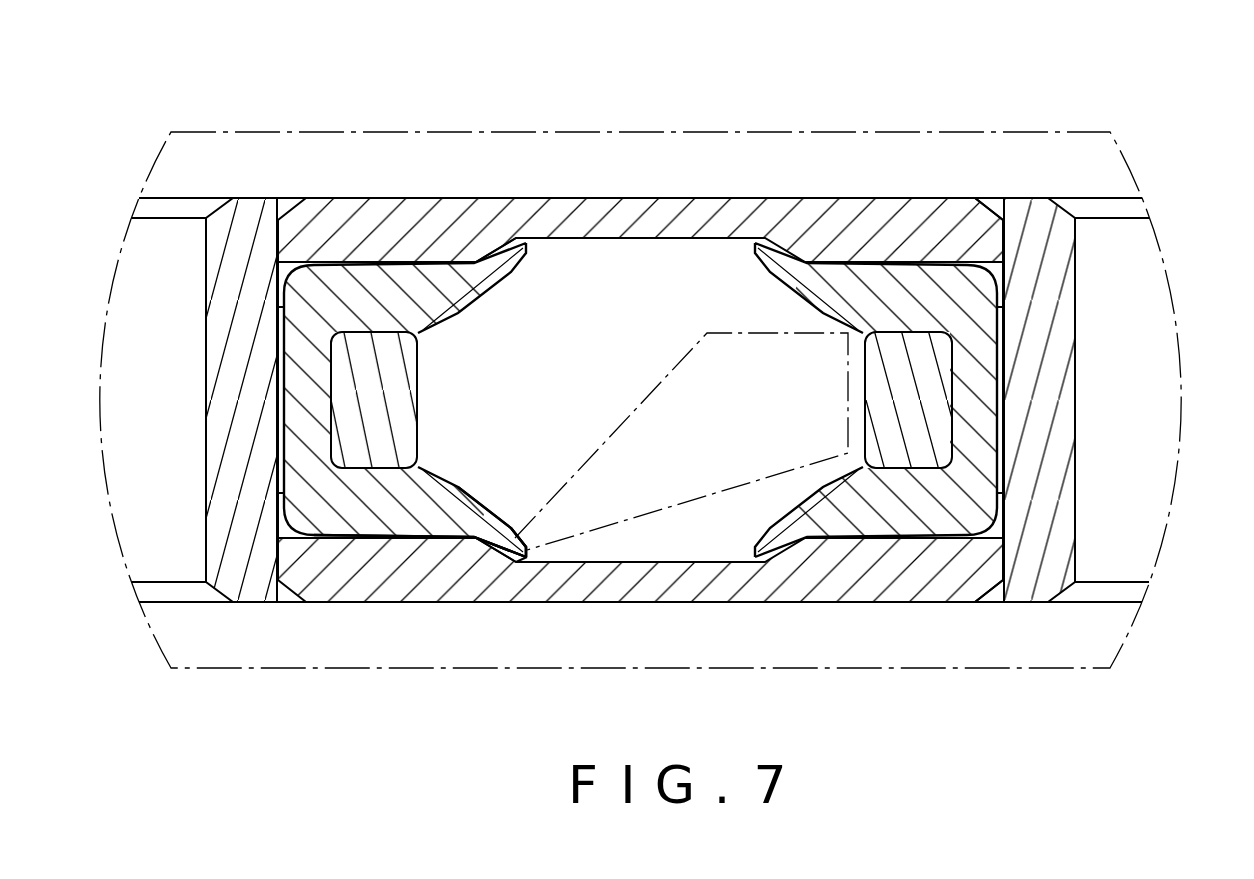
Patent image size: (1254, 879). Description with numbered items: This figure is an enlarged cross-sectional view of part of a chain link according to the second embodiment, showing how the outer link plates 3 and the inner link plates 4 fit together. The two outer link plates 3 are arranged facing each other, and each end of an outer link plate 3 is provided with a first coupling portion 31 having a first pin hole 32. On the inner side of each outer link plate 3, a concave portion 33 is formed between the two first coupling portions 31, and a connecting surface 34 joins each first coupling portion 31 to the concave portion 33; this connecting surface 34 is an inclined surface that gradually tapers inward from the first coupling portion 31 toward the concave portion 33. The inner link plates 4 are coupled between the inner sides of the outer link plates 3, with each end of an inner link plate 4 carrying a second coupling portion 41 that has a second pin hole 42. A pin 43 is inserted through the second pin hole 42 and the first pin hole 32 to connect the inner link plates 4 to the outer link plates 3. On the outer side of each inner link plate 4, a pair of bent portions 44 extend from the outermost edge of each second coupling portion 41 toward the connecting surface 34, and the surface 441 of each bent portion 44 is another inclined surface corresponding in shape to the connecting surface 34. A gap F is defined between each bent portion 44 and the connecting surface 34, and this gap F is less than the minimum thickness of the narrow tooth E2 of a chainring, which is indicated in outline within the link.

The outer link plate 3 is at (665, 213).
The first coupling portion 31 is at (967, 238).
The first pin hole 32 is at (1006, 240).
The concave portion 33 is at (605, 237).
The connecting surface 34 is at (483, 537).
The inner link plate 4 is at (937, 303).
The second coupling portion 41 is at (985, 348).
The second pin hole 42 is at (1005, 328).
The pin 43 is at (1040, 528).
The bent portion 44 is at (490, 545).
The surface of bent portion 441 is at (503, 552).
The gap F is at (515, 559).
The narrow tooth E2 is at (722, 333).